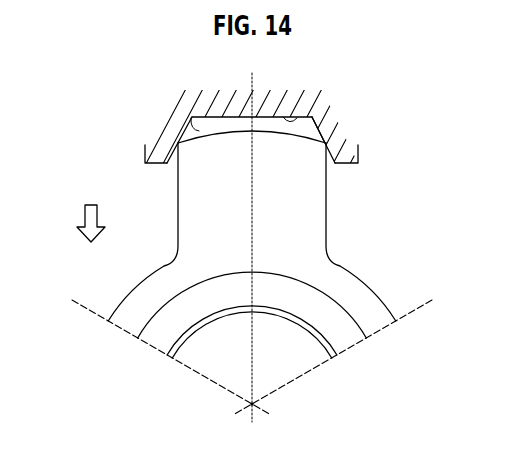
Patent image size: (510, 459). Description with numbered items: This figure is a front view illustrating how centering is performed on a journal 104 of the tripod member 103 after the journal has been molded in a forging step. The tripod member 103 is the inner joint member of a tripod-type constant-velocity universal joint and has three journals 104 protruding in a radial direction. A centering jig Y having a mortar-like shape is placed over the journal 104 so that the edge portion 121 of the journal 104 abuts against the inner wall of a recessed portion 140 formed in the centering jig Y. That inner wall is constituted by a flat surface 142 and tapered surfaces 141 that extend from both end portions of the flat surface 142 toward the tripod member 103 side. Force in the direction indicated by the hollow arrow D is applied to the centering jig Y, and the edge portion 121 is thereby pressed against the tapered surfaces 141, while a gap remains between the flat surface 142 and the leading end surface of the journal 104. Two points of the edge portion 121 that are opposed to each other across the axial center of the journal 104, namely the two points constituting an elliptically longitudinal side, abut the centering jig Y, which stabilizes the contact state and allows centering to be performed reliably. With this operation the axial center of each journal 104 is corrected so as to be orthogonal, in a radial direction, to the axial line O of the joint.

The tripod member 103 is at (338, 340).
The journal 104 is at (302, 217).
The edge portion 121 is at (348, 136).
The recessed portion 140 is at (218, 118).
The tapered surface 141 is at (193, 117).
The flat surface 142 is at (321, 94).
The centering jig Y is at (334, 120).
The hollow arrow direction D is at (85, 215).
The axial line of the joint O is at (252, 358).